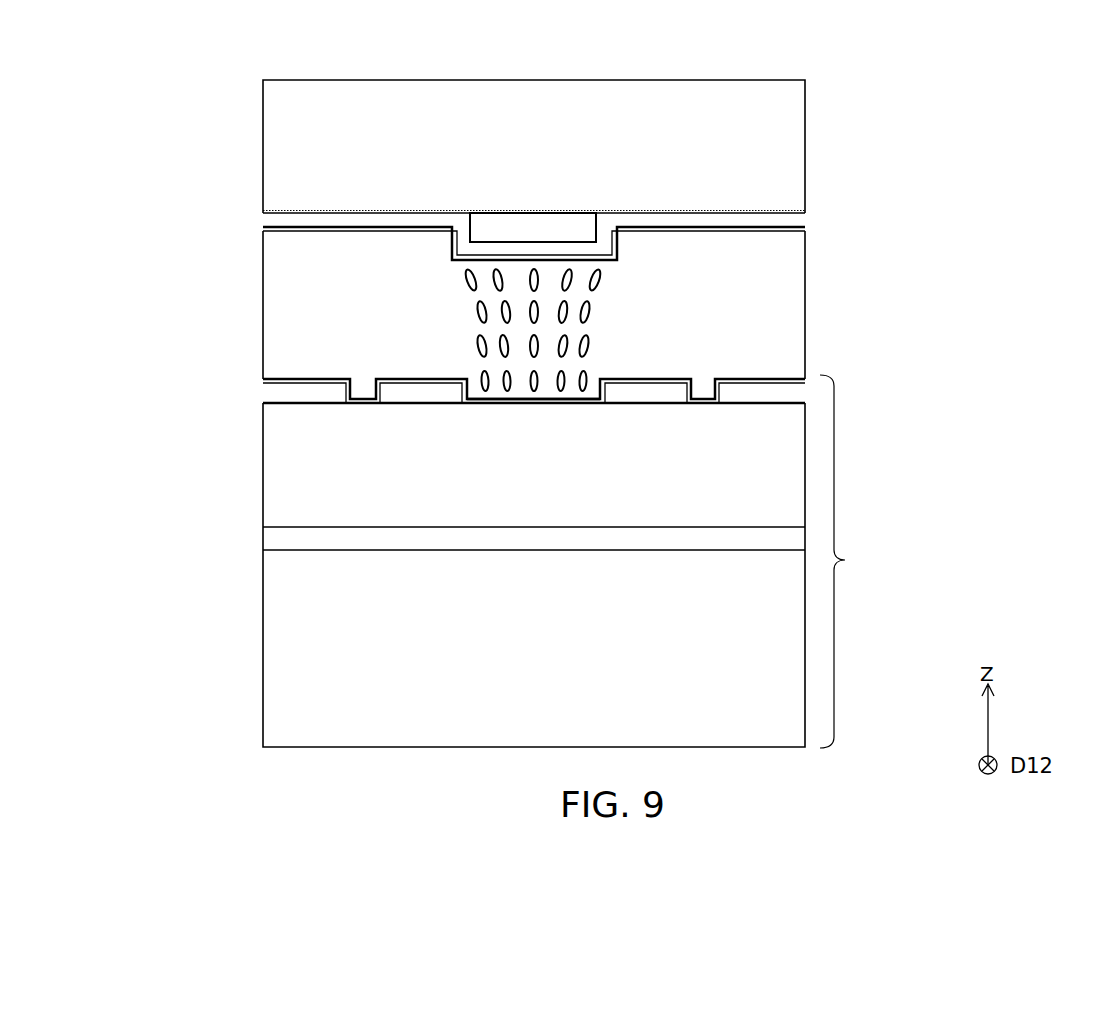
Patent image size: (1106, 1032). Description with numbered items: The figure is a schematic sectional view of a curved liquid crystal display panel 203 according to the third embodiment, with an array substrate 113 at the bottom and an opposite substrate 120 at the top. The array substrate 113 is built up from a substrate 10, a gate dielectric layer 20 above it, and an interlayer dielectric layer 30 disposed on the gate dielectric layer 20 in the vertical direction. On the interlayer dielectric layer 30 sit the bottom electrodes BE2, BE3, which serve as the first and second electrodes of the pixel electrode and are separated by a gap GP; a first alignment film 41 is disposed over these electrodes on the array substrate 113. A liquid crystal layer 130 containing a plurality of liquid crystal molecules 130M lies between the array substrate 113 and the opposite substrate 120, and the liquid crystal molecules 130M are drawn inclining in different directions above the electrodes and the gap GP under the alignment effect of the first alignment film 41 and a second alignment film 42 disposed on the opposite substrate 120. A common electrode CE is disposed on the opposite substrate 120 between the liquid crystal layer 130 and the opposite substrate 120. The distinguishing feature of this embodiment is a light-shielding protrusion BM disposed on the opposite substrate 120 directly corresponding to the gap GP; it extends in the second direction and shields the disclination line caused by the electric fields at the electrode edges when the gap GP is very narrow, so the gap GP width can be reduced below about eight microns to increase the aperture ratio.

The opposite substrate 120 is at (288, 142).
The common electrode CE is at (274, 228).
The second alignment film 42 is at (284, 229).
The light-shielding protrusion BM is at (534, 226).
The liquid crystal layer 130 is at (288, 270).
The liquid crystal molecules 130M is at (600, 280).
The first alignment film 41 is at (272, 380).
The second bottom electrode (first electrode E1) BE2 is at (304, 393).
The third bottom electrode (second electrode E2) BE3 is at (644, 393).
The gap GP is at (497, 392).
The interlayer dielectric layer 30 is at (288, 465).
The gate dielectric layer 20 is at (288, 538).
The substrate 10 is at (288, 648).
The array substrate 113 is at (856, 561).
The curved liquid crystal display panel 203 is at (908, 64).